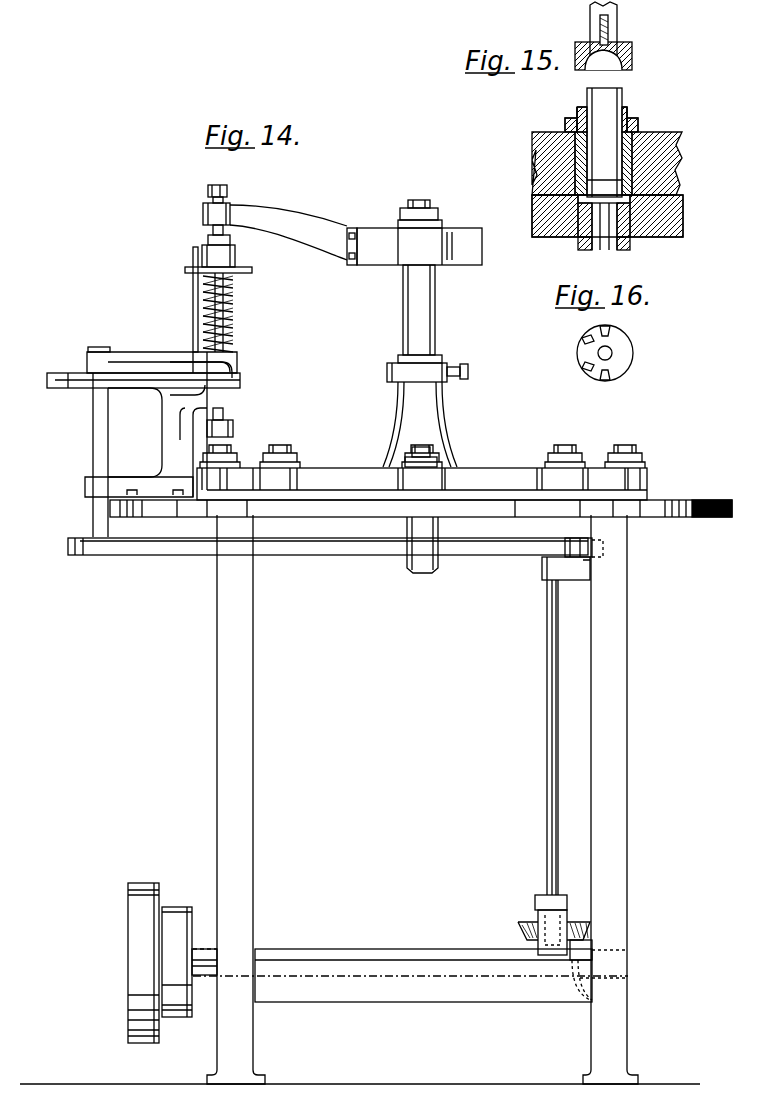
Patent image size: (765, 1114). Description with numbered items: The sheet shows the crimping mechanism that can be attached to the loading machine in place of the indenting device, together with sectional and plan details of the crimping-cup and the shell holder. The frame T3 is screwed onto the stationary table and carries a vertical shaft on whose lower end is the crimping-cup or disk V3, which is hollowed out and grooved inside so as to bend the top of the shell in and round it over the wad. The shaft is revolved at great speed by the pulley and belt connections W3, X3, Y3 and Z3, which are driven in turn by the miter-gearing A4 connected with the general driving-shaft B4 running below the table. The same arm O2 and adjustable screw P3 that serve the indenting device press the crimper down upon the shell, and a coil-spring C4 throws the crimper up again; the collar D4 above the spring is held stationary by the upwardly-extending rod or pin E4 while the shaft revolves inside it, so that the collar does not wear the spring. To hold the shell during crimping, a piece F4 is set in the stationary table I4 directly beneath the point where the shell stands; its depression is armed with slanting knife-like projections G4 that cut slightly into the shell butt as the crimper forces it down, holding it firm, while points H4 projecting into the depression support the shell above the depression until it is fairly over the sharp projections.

In FIG. 14, the adjustable screw P3 is at (208, 190).
In FIG. 14, the arm O2 is at (275, 231).
In FIG. 14, the collar D4 is at (235, 264).
In FIG. 14, the crimping-cup V3 is at (233, 428).
In FIG. 15, the crimping-cup V3 is at (620, 36).
In FIG. 14, the upwardly-extending rod or pin E4 is at (193, 312).
In FIG. 14, the coil-spring C4 is at (233, 324).
In FIG. 14, the pulley and belt connection W3 is at (240, 380).
In FIG. 14, the pulley and belt connection X3 is at (47, 382).
In FIG. 14, the frame T3 is at (193, 410).
In FIG. 14, the pulley and belt connection Y3 is at (68, 546).
In FIG. 14, the pulley and belt connection Z3 is at (520, 546).
In FIG. 14, the general driving-shaft B4 is at (345, 952).
In FIG. 14, the miter-gearing A4 is at (590, 924).
In FIG. 15, the base plate I4 is at (637, 200).
In FIG. 15, the holding-piece F4 is at (622, 212).
In FIG. 16, the slanting knife-like projections G4 is at (608, 330).
In FIG. 16, the points H4 is at (580, 340).